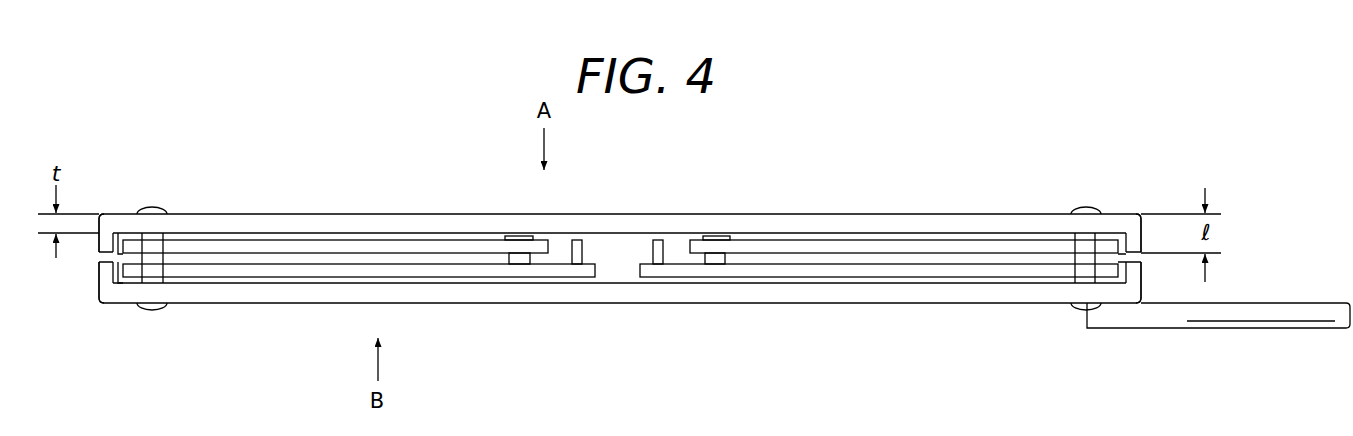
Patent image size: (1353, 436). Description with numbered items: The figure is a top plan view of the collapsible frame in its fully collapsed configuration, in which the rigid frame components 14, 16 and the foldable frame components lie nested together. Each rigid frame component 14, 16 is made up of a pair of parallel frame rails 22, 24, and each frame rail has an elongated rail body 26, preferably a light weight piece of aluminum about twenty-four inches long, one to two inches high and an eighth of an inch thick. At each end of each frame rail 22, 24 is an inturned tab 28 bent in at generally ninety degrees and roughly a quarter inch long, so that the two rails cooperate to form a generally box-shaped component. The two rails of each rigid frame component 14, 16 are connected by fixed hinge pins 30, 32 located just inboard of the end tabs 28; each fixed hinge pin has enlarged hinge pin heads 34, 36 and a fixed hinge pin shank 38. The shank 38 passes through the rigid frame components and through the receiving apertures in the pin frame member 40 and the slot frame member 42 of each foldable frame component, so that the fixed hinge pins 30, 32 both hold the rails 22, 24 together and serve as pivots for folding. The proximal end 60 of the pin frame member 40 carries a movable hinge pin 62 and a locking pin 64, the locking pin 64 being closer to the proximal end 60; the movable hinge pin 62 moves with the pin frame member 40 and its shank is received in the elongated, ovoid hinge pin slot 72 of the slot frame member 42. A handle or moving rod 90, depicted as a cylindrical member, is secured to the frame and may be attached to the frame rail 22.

The rigid frame component 14 is at (916, 181).
The rigid frame component 16 is at (620, 198).
The frame rail 22 is at (653, 290).
The frame rail 24 is at (656, 230).
The elongated rail body 26 is at (363, 228).
The inturned tab 28 is at (104, 248).
The fixed hinge pin 30 is at (1105, 201).
The fixed hinge pin 32 is at (173, 200).
The enlarged hinge pin head 34 is at (152, 207).
The enlarged hinge pin head 36 is at (163, 310).
The fixed hinge pin shank 38 is at (1060, 248).
The pin frame member 40 is at (155, 239).
The slot frame member 42 is at (851, 239).
The proximal end 60 is at (640, 273).
The movable hinge pin 62 is at (721, 238).
The locking pin 64 is at (653, 250).
The hinge pin slot 72 is at (707, 237).
The handle or moving rod 90 is at (1281, 291).